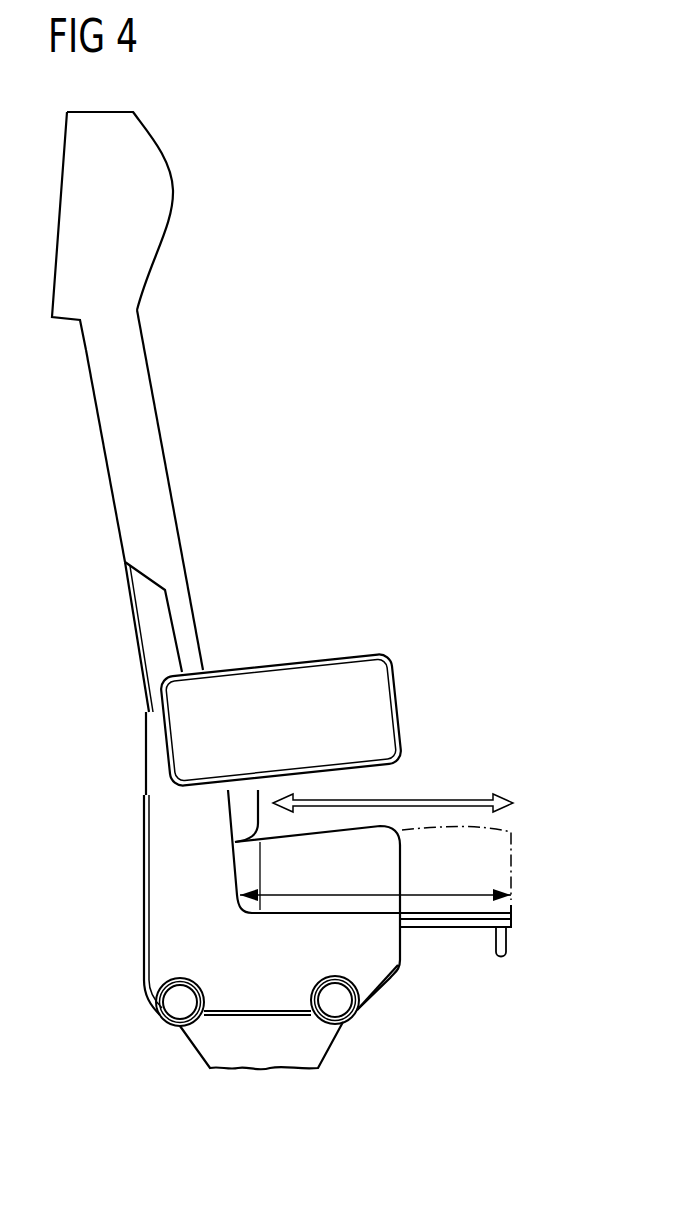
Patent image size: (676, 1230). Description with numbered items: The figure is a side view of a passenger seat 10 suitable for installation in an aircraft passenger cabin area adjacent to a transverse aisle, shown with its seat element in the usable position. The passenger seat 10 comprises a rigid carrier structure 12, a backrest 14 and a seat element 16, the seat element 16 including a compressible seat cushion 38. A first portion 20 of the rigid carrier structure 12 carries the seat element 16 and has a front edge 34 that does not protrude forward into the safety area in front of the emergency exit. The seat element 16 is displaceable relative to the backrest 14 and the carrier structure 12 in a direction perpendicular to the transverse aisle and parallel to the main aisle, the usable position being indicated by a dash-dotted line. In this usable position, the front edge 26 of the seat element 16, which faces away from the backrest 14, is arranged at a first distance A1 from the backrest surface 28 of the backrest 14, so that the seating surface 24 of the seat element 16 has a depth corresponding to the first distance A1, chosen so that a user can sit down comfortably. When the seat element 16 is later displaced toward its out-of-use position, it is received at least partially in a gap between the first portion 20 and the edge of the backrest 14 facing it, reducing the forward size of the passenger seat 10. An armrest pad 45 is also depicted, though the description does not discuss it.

The passenger seat 10 is at (228, 250).
The backrest 14 is at (115, 397).
The backrest surface 28 is at (178, 512).
The armrest pad 45 is at (374, 668).
The compressible seat cushion 38 is at (270, 855).
The rigid carrier structure 12 is at (163, 870).
The seat element 16 is at (502, 850).
The seating surface 24 is at (467, 823).
The first distance A1 is at (385, 893).
The front edge 26 is at (512, 875).
The front edge of the first portion 34 is at (402, 945).
The first portion 20 is at (140, 1020).